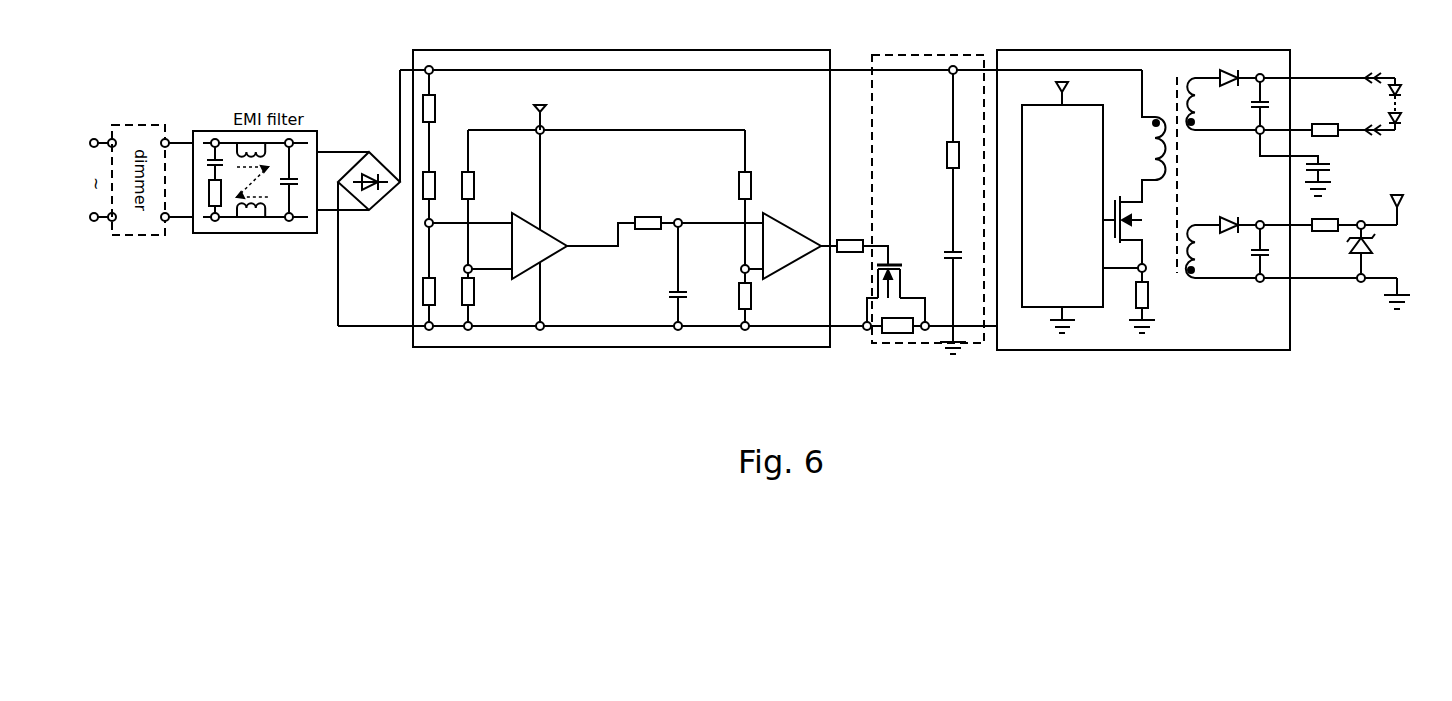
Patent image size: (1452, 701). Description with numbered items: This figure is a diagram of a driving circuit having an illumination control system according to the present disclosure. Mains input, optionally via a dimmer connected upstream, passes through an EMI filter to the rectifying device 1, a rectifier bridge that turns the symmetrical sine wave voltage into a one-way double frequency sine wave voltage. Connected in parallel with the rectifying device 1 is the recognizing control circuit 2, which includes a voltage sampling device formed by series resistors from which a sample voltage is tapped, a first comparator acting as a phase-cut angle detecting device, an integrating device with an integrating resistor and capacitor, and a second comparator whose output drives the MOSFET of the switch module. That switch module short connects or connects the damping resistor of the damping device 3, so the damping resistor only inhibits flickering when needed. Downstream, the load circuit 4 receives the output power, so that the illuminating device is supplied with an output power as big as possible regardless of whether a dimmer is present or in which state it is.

The rectifying device 1 is at (369, 198).
The recognizing control circuit 2 is at (625, 182).
The damping device 3 is at (910, 185).
The load circuit 4 is at (1211, 183).